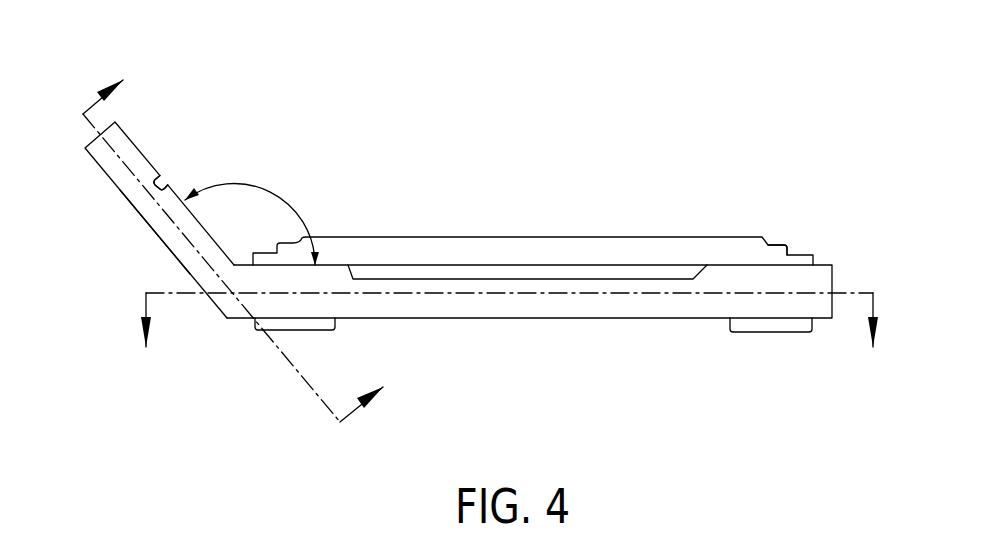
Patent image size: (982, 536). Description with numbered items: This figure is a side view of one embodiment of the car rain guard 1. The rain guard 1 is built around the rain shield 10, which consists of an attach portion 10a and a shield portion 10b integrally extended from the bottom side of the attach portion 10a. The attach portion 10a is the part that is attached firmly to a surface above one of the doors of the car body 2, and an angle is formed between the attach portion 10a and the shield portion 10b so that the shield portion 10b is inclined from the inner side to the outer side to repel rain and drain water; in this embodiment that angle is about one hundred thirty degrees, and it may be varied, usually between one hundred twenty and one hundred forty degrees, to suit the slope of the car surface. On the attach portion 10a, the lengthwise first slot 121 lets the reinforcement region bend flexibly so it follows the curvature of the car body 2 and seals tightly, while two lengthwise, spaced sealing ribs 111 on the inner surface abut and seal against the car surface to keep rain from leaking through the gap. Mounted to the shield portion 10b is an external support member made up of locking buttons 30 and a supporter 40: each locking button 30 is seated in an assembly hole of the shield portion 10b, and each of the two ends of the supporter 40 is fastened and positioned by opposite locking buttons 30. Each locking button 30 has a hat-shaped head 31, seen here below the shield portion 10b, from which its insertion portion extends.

The rain shield 10 is at (458, 163).
The attach portion 10a is at (137, 148).
The shield portion 10b is at (350, 264).
The sealing rib 111 is at (145, 221).
The first slot 121 is at (156, 186).
The supporter 40 is at (590, 237).
The locking button 30 is at (783, 245).
The hat-shaped head 31 is at (757, 332).
The rain guard 1 is at (255, 232).
The car body 2 is at (510, 349).